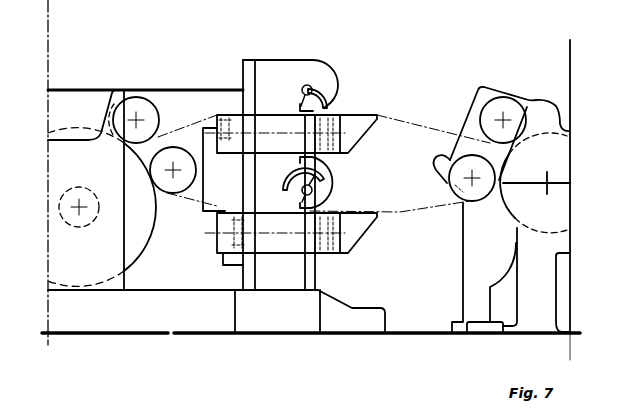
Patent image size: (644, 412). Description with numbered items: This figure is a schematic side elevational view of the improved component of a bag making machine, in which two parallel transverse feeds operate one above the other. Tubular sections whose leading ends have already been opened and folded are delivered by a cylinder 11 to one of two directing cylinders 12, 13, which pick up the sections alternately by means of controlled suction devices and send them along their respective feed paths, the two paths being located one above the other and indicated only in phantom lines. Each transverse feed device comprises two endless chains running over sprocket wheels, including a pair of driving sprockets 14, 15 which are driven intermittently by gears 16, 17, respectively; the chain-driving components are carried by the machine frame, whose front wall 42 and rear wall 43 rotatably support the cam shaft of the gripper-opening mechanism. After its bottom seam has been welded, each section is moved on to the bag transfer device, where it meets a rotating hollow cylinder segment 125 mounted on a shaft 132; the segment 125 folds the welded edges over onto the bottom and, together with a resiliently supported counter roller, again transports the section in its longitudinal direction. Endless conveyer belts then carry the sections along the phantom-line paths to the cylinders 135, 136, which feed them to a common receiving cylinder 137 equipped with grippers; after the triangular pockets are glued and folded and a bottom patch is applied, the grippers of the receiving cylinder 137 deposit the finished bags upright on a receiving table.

The cylinder 11 is at (500, 195).
The directing cylinder 12 is at (502, 108).
The directing cylinder 13 is at (474, 199).
The driving sprocket 14 is at (375, 280).
The driving sprocket 15 is at (375, 268).
The gear 16 is at (225, 125).
The gear 17 is at (238, 242).
The front wall 42 is at (310, 282).
The rear wall 43 is at (248, 280).
The hollow cylinder segment 125 is at (298, 178).
The shaft 132 is at (318, 190).
The cylinder 135 is at (135, 115).
The cylinder 136 is at (163, 180).
The receiving cylinder 137 is at (133, 247).